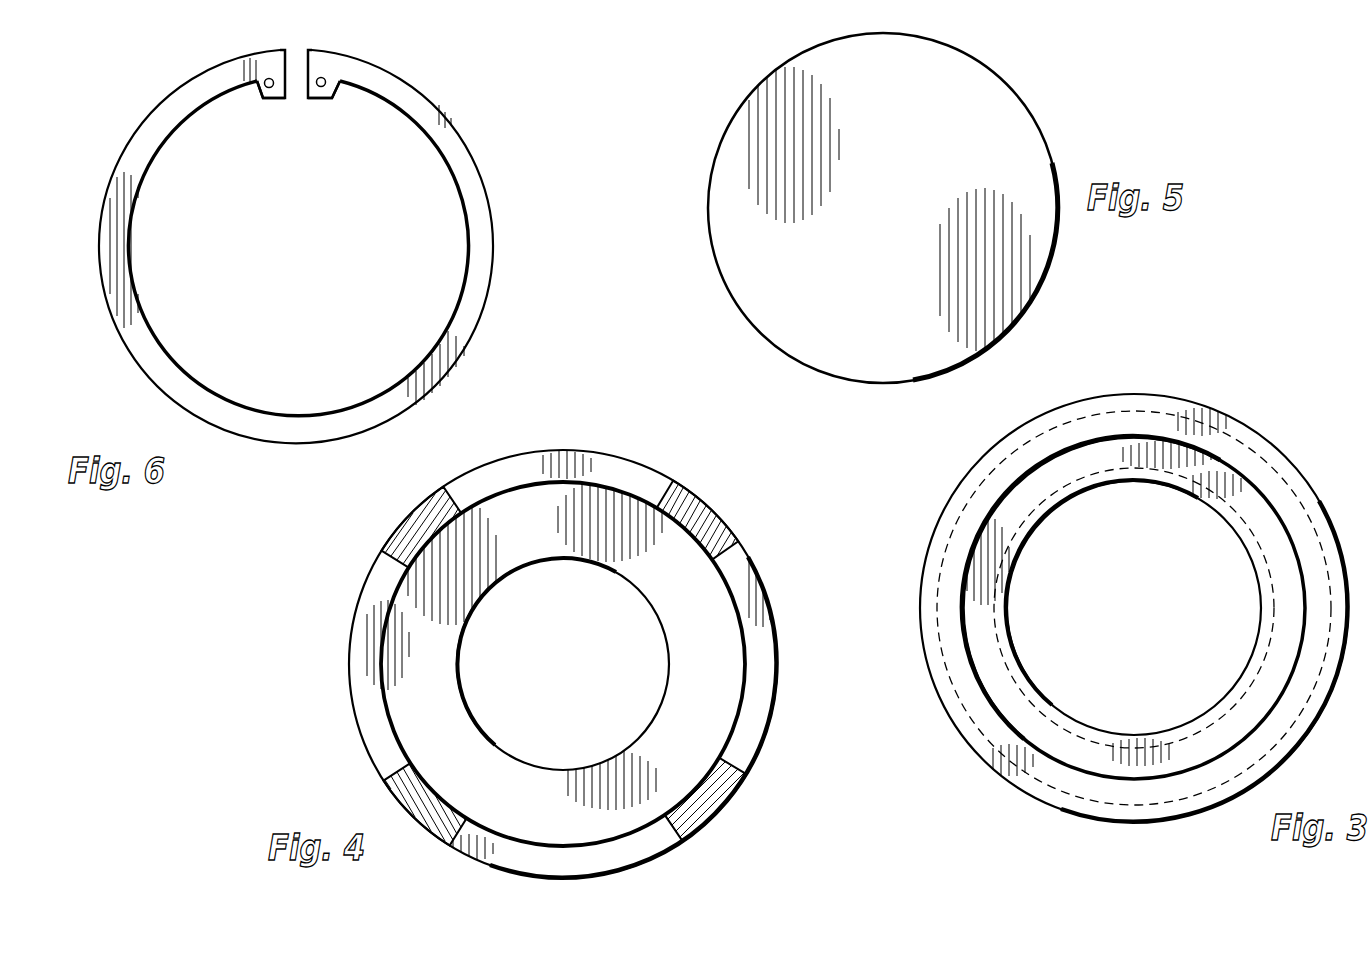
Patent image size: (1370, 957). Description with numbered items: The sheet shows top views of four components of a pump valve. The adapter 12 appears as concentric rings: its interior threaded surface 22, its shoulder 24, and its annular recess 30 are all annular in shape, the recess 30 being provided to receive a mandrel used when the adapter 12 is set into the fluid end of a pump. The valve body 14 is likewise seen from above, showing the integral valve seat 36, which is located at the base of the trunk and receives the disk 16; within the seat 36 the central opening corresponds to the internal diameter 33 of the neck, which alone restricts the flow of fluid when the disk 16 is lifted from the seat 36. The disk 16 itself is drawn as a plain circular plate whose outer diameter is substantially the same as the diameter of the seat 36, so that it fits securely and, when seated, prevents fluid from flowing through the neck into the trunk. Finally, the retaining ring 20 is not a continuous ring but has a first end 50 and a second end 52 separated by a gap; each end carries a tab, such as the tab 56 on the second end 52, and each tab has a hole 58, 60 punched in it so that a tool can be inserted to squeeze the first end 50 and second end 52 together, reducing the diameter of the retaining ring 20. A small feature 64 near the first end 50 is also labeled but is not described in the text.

In FIG. 3, the housing ring assembly 12 is at (1092, 598).
In FIG. 4, the flange ring 14 is at (507, 664).
In FIG. 5, the disk 16 is at (718, 266).
In FIG. 6, the retaining ring 20 is at (319, 242).
In FIG. 3, the inner circular wall 22 is at (1011, 635).
In FIG. 3, the outer circular wall 24 is at (1276, 443).
In FIG. 3, the annular groove 30 is at (995, 673).
In FIG. 4, the central opening 33 is at (672, 668).
In FIG. 4, the annular ring portion 36 is at (425, 623).
In FIG. 6, the first free end 50 is at (232, 111).
In FIG. 6, the second free end 52 is at (367, 102).
In FIG. 6, the notch 56 is at (310, 102).
In FIG. 6, the first aperture 58 is at (262, 94).
In FIG. 6, the second aperture 60 is at (337, 91).
In FIG. 6, the shoulder 64 is at (278, 102).